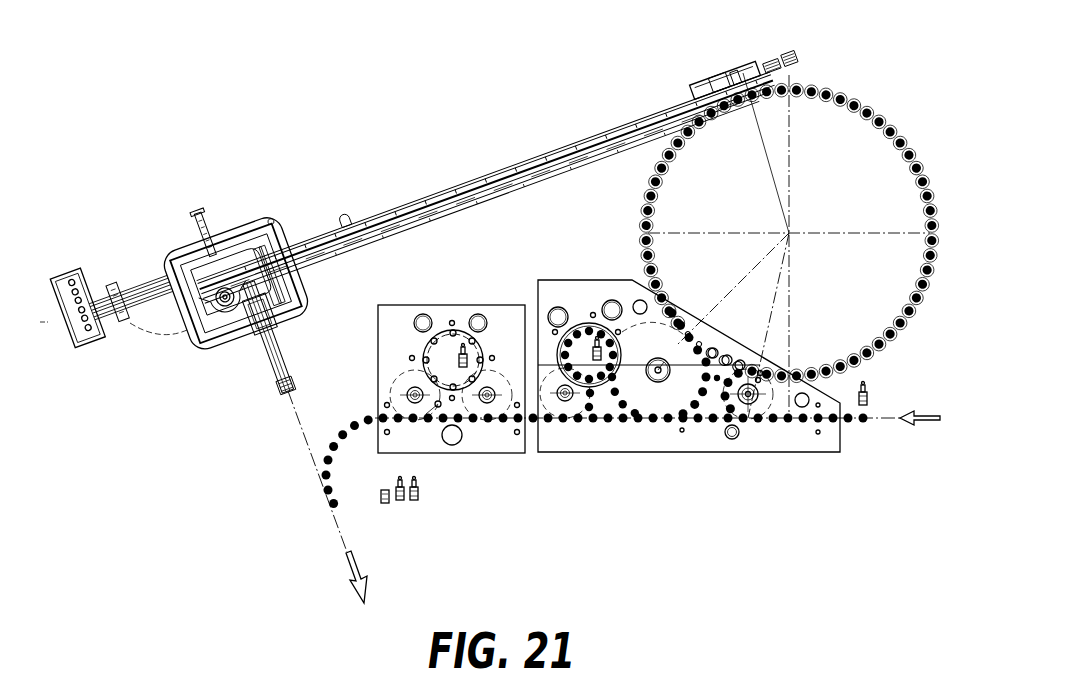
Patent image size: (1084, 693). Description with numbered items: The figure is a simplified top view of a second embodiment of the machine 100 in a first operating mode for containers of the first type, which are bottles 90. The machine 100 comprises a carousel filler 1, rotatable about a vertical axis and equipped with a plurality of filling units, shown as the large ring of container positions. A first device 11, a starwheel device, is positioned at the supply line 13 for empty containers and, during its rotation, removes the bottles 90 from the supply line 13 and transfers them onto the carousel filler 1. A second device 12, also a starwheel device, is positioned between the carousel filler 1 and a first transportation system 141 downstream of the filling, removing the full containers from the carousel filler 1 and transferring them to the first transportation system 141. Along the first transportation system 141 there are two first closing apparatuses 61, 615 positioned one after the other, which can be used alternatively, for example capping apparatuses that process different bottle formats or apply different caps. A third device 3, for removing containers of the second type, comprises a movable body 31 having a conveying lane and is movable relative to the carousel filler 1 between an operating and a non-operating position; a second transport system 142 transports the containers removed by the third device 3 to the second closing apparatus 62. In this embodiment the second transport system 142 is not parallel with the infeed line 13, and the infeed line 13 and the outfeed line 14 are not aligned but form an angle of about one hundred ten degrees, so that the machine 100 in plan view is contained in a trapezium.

The machine 100 is at (922, 89).
The carousel filler 1 is at (867, 187).
The third device 3 is at (715, 68).
The movable body 31 is at (713, 82).
The second transport system 142 is at (455, 198).
The first transportation system 141 is at (587, 330).
The second closing apparatus 62 is at (240, 278).
The first closing apparatus 615 is at (453, 370).
The first closing apparatus 61 is at (583, 350).
The second device 12 is at (675, 378).
The first device 11 is at (763, 398).
The bottles 90 is at (866, 405).
The supply line 13 is at (886, 420).
The outfeed line 14 is at (347, 552).